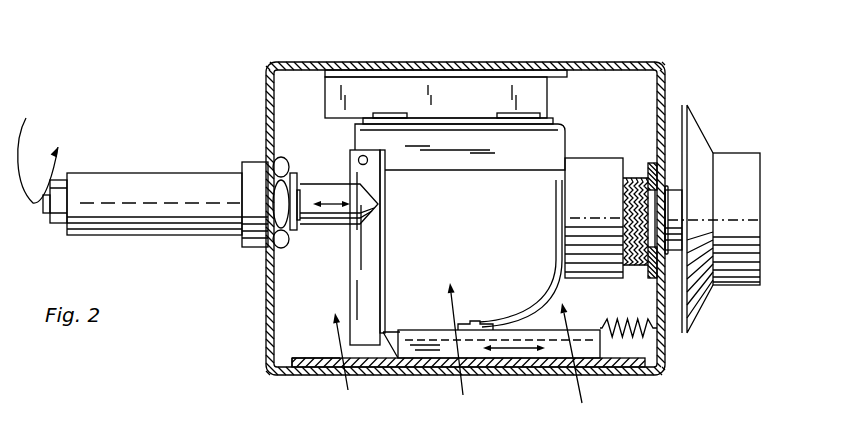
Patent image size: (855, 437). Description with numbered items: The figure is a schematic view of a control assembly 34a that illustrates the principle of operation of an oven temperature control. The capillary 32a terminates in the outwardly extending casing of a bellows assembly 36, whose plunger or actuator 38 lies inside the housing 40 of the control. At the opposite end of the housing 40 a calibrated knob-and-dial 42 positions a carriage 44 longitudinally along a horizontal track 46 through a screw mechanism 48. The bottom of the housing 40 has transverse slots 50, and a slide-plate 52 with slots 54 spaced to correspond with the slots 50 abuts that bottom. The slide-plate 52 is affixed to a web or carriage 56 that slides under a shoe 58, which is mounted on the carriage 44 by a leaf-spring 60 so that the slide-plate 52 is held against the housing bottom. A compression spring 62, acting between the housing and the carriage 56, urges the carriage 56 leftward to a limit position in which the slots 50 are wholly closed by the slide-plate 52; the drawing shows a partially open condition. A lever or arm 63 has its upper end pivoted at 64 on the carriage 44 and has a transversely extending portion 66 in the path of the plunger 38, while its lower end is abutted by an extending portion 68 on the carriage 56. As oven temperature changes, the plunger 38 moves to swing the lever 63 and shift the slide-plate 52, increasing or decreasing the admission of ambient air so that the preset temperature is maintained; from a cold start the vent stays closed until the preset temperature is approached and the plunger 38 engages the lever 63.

The capillary 32a is at (44, 149).
The control assembly 34a is at (370, 52).
The bellows assembly 36 is at (160, 199).
The plunger 38 is at (337, 184).
The housing 40 is at (267, 104).
The knob-and-dial 42 is at (746, 194).
The carriage 44 is at (538, 158).
The horizontal track 46 is at (493, 104).
The screw mechanism 48 is at (605, 208).
The transverse slots 50 is at (402, 370).
The slide-plate 52 is at (318, 358).
The slots 54 is at (332, 358).
The carriage 56 is at (582, 348).
The shoe 58 is at (473, 318).
The leaf-spring 60 is at (550, 273).
The compression spring 62 is at (613, 312).
The lever 63 is at (350, 250).
The pivot 64 is at (359, 157).
The transversely extending portion 66 is at (385, 265).
The extending portion 68 is at (387, 332).